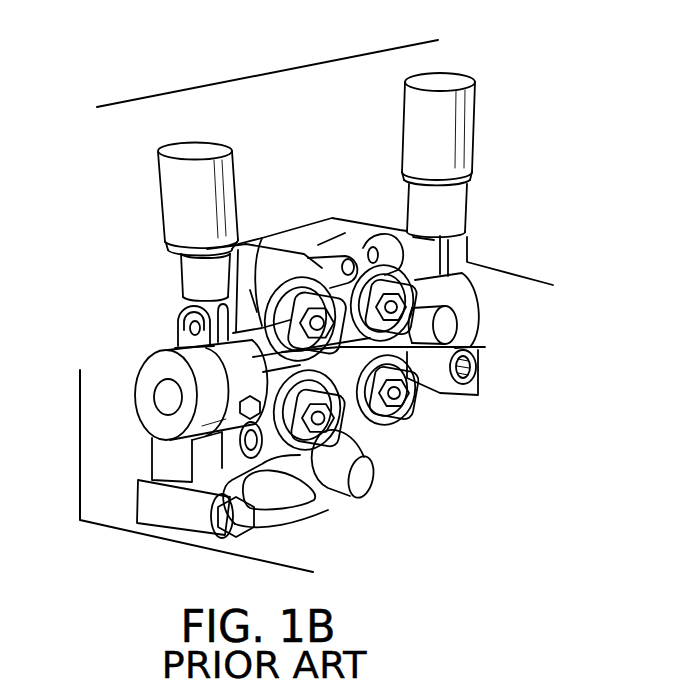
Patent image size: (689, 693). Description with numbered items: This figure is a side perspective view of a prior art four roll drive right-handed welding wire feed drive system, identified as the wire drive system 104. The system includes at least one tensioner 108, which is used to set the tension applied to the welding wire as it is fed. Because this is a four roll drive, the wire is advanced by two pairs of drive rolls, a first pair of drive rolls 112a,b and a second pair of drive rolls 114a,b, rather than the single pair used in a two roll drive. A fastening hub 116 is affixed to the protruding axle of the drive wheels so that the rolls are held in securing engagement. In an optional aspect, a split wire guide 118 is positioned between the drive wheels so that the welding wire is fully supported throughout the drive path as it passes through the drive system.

The wire drive system 104 is at (86, 314).
The tensioner 108 is at (195, 165).
The pair of drive rolls 112a,b is at (300, 455).
The pair of drive rolls 114a,b is at (383, 422).
The fastening hub 116 is at (316, 312).
The split wire guide 118 is at (470, 353).